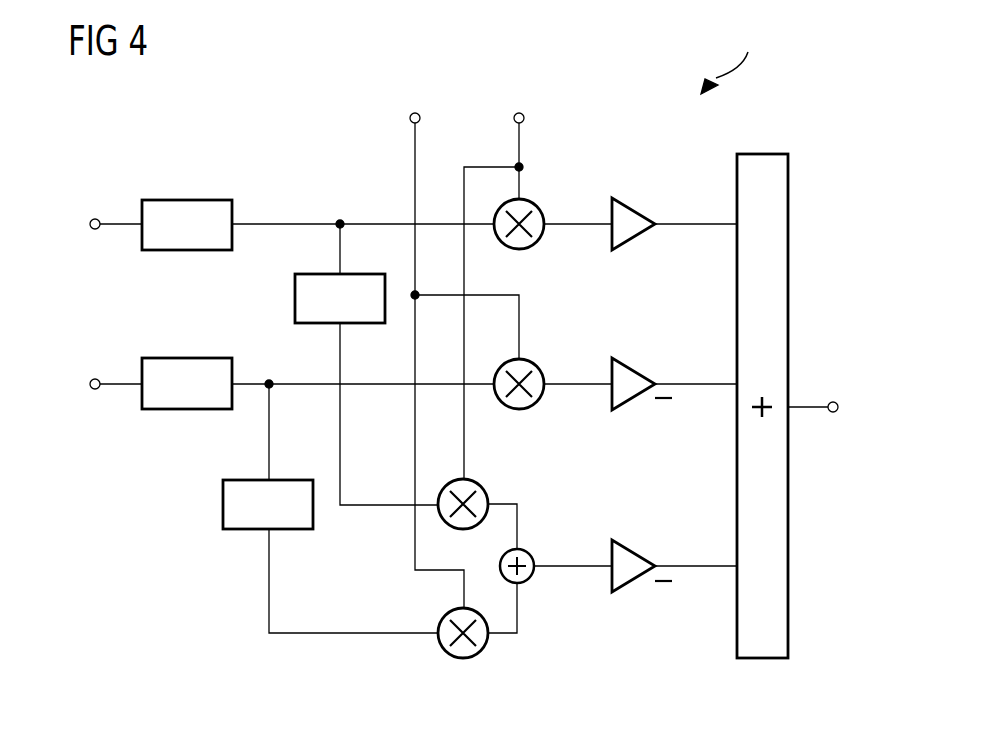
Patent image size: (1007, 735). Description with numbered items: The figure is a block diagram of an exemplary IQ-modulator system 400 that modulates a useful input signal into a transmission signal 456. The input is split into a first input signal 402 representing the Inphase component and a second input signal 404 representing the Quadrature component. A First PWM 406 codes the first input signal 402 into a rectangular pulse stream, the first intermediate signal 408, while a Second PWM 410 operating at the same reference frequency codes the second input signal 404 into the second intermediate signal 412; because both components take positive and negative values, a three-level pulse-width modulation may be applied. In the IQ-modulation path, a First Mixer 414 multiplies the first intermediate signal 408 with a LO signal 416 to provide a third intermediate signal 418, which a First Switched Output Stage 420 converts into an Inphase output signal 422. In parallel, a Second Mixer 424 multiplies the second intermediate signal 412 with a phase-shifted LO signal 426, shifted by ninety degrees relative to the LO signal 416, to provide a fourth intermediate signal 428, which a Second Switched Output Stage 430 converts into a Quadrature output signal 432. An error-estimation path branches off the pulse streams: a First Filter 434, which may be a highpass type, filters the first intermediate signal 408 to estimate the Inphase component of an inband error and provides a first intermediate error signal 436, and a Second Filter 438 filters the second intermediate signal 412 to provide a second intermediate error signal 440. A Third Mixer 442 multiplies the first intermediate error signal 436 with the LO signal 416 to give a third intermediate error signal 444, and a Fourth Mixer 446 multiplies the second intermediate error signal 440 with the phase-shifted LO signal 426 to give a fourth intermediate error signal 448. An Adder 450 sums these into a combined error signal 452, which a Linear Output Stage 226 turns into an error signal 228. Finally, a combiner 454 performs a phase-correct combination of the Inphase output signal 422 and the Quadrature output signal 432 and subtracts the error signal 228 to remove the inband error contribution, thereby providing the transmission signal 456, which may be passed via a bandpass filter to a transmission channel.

The system 400 is at (735, 58).
The first input signal 402 is at (95, 219).
The second input signal 404 is at (95, 379).
The First PWM 406 is at (175, 200).
The first intermediate signal 408 is at (285, 222).
The Second PWM 410 is at (158, 358).
The second intermediate signal 412 is at (311, 388).
The First Mixer 414 is at (537, 242).
The LO signal 416 is at (519, 112).
The third intermediate signal 418 is at (568, 222).
The First Switched Output Stage 420 is at (633, 210).
The Inphase output signal 422 is at (700, 222).
The Second Mixer 424 is at (537, 402).
The phase-shifted LO signal 426 is at (416, 112).
The fourth intermediate signal 428 is at (572, 382).
The Second Switched Output Stage 430 is at (633, 370).
The Quadrature output signal 432 is at (700, 382).
The First Filter 434 is at (295, 300).
The first intermediate error signal 436 is at (378, 503).
The Second Filter 438 is at (223, 500).
The second intermediate error signal 440 is at (350, 637).
The Third Mixer 442 is at (480, 484).
The third intermediate error signal 444 is at (520, 505).
The Fourth Mixer 446 is at (466, 660).
The fourth intermediate error signal 448 is at (518, 617).
The Adder 450 is at (530, 578).
The combined error signal 452 is at (573, 536).
The Linear Output Stage 226 is at (633, 552).
The error signal 228 is at (697, 566).
The combiner 454 is at (762, 153).
The transmission signal 456 is at (836, 400).